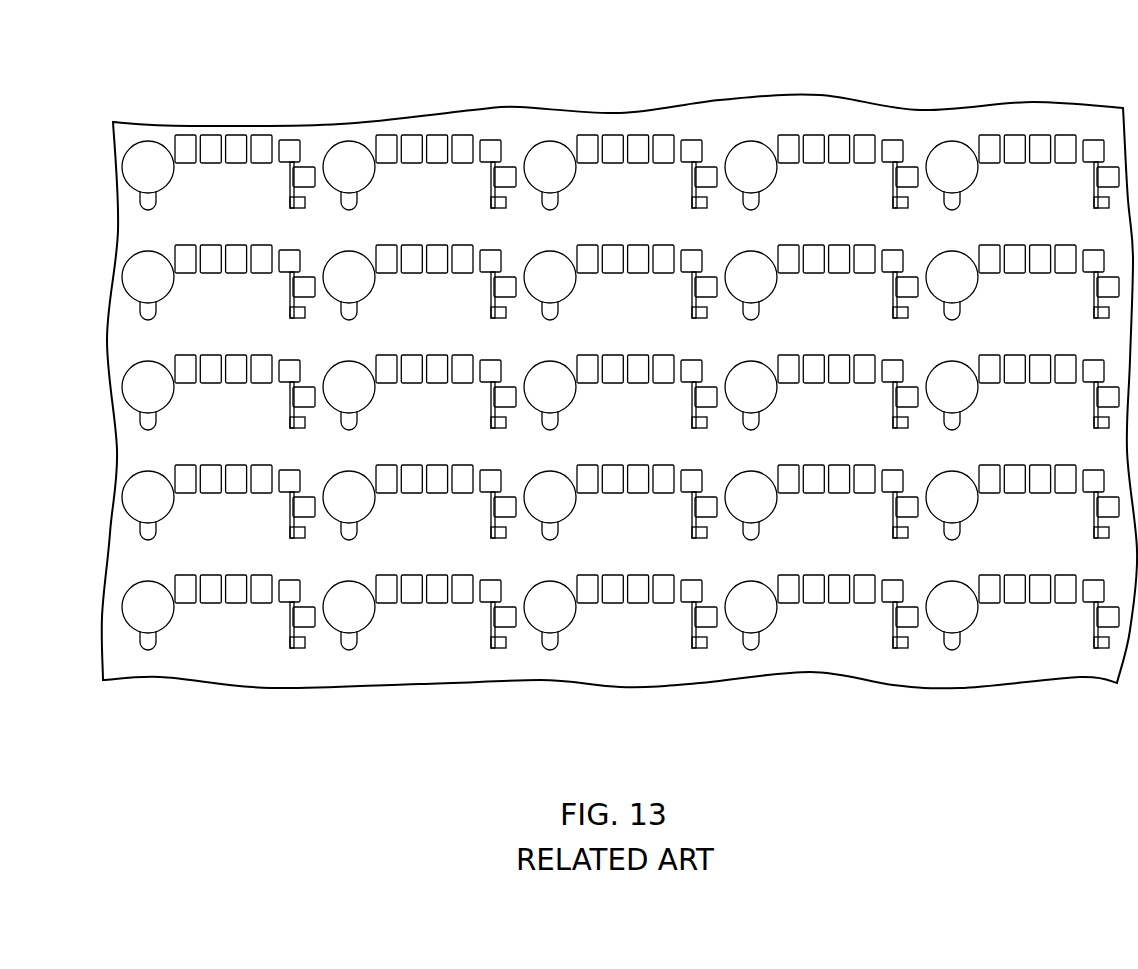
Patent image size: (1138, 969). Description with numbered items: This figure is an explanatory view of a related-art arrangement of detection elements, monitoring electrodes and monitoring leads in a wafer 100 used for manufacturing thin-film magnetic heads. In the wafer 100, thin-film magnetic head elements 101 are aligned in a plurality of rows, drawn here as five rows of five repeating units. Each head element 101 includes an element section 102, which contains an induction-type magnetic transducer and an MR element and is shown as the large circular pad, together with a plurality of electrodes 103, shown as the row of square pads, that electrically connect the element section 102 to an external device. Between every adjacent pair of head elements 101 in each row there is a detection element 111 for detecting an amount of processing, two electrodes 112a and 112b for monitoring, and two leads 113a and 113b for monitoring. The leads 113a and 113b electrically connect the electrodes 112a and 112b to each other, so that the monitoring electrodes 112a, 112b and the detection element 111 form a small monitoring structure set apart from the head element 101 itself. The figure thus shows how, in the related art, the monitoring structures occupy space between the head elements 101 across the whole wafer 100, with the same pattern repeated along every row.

The wafer 100 is at (605, 696).
The thin-film magnetic head element 101 is at (398, 109).
The element section 102 is at (353, 141).
The electrodes 103 is at (457, 135).
The detection element 111 is at (504, 155).
The electrode for monitoring 112a is at (490, 140).
The electrode for monitoring 112b is at (512, 167).
The lead for monitoring 113a is at (491, 176).
The lead for monitoring 113b is at (506, 197).